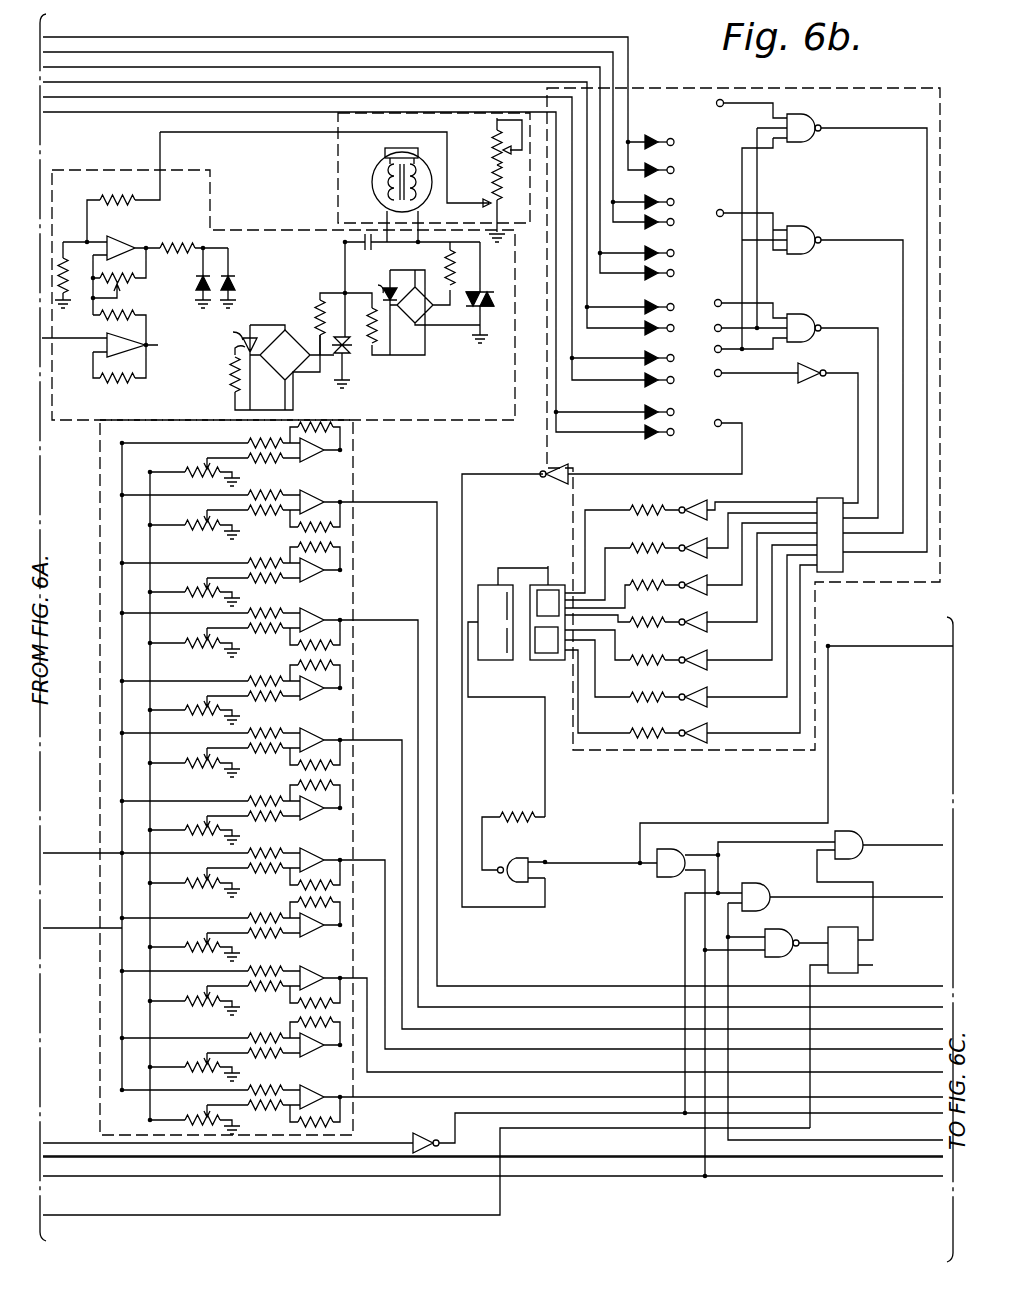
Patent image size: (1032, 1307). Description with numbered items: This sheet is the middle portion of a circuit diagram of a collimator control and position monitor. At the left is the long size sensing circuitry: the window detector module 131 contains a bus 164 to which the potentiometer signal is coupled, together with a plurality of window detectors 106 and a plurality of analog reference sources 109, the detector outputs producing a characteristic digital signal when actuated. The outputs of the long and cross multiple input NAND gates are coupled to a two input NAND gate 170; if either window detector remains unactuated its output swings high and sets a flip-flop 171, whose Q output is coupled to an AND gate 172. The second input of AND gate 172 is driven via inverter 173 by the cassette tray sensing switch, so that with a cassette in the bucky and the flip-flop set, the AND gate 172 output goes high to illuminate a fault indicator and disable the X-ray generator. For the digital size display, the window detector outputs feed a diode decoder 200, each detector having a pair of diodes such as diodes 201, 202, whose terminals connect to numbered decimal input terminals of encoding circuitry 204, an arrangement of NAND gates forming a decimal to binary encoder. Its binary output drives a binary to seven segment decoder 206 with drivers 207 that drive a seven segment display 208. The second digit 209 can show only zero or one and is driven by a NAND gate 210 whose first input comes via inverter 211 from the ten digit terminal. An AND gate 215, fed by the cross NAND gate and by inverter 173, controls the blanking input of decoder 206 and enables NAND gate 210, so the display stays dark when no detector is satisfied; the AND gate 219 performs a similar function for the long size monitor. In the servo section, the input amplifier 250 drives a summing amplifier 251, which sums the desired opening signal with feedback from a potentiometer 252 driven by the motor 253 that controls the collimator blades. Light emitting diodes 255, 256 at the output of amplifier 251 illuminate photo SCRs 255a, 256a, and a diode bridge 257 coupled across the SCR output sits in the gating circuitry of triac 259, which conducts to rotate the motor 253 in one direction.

The diode decoder 200 is at (657, 126).
The diode 201 is at (661, 141).
The diode 202 is at (661, 169).
The encoding circuitry 204 is at (841, 92).
The binary to 7 segment decoder 206 is at (830, 498).
The drivers 207 is at (688, 497).
The 7 segment display 208 is at (534, 660).
The second digit 209 is at (487, 660).
The NAND gate 210 is at (516, 857).
The inverter 211 is at (554, 480).
The AND gate 215 is at (663, 870).
The AND gate 219 is at (767, 886).
The two input NAND gate 170 is at (771, 930).
The flip-flop 171 is at (848, 930).
The AND gate 172 is at (852, 832).
The inverter 173 is at (430, 1122).
The bus 164 is at (100, 658).
The window detector module 131 is at (98, 890).
The analog reference sources 109 is at (204, 1173).
The window detectors 106 is at (301, 1170).
The amplifier 250 is at (146, 346).
The summing amplifier 251 is at (112, 240).
The potentiometer 252 is at (492, 156).
The motor 253 is at (378, 168).
The light emitting diode 255 is at (205, 288).
The photo SCR 255a is at (267, 334).
The light emitting diode 256 is at (235, 282).
The photo SCR 256a is at (395, 284).
The diode bridge 257 is at (290, 365).
The triac 259 is at (353, 366).